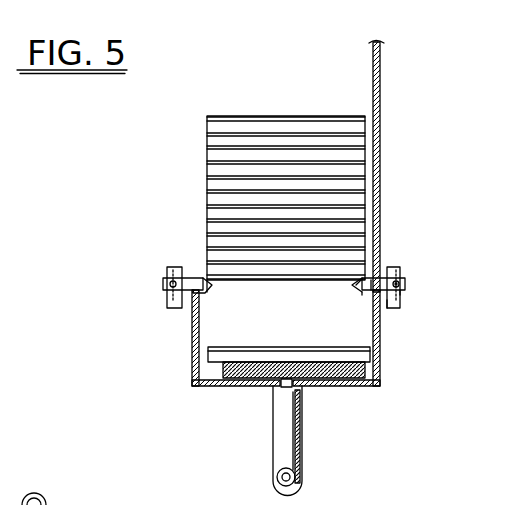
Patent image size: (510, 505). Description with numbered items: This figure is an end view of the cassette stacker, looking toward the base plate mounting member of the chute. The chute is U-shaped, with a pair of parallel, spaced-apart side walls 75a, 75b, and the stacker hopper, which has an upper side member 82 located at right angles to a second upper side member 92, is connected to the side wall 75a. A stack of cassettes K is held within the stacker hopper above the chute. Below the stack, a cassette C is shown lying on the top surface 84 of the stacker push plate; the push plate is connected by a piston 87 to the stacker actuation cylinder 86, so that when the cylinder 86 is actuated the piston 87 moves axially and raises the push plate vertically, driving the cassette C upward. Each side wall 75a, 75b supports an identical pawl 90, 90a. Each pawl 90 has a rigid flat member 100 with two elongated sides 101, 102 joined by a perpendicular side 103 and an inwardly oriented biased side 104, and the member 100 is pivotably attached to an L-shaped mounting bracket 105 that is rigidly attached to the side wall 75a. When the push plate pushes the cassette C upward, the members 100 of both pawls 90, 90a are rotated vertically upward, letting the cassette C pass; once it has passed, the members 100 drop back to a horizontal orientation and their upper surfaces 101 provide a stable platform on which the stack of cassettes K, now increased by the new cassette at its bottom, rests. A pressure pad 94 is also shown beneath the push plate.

The stack of cassettes K is at (201, 116).
The upper side member 82 is at (315, 95).
The second upper side member 92 is at (380, 89).
The side wall of chute 75a is at (388, 345).
The side wall of chute 75b is at (192, 337).
The top surface of push plate 84 is at (232, 349).
The cassette C is at (270, 352).
The pressure pad 94 is at (238, 382).
The stacker actuation cylinder 86 is at (287, 430).
The piston 87 is at (300, 397).
The pawl 90a is at (180, 264).
The pawl 90 is at (404, 270).
The rigid flat member 100 is at (376, 283).
The elongated side 101 is at (359, 285).
The inwardly oriented biased side 104 is at (367, 292).
The perpendicular side 103 is at (401, 285).
The L-shaped mounting bracket 105 is at (396, 295).
The elongated side 102 is at (388, 306).